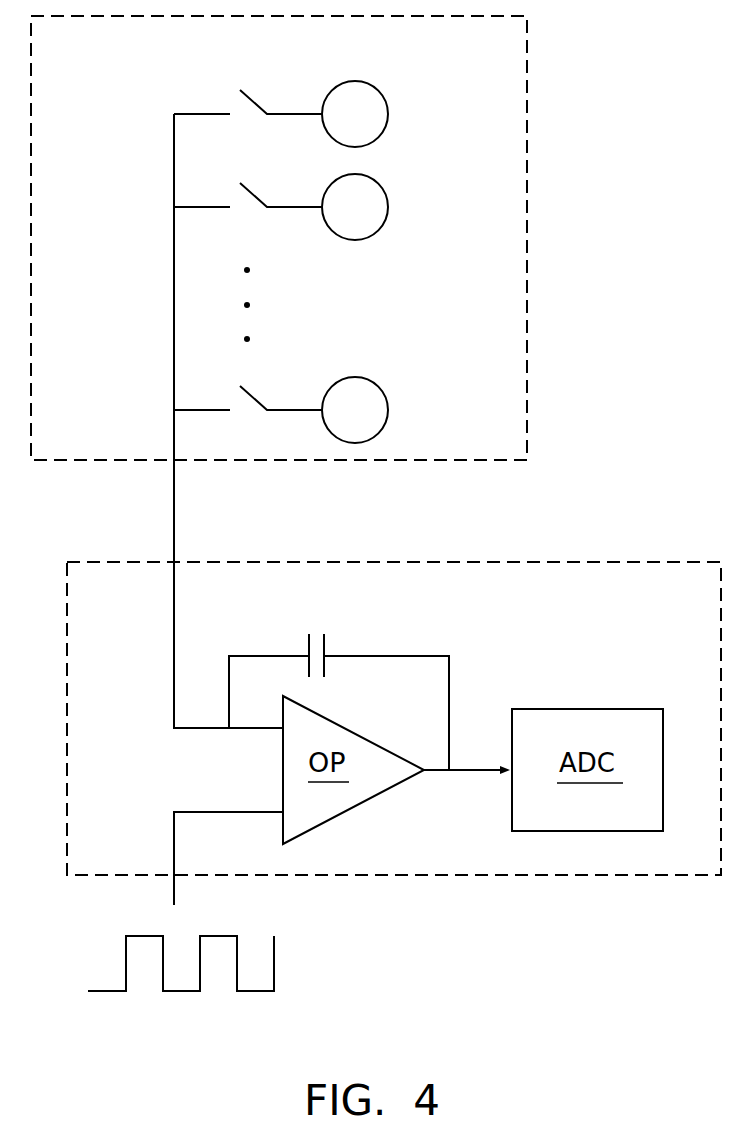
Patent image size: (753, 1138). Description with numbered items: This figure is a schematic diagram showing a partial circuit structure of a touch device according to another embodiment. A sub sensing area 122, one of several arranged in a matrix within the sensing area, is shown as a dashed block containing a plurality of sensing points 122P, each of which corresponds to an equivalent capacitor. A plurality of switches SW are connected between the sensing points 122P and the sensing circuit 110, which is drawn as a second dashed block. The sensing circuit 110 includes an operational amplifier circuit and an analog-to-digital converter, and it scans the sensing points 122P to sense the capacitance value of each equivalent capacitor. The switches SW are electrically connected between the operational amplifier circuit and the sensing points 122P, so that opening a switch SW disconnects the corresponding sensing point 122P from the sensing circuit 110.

The sub sensing area 122 is at (527, 40).
The sensing point 122P is at (388, 114).
The switch SW is at (212, 89).
The sensing circuit 110 is at (652, 562).